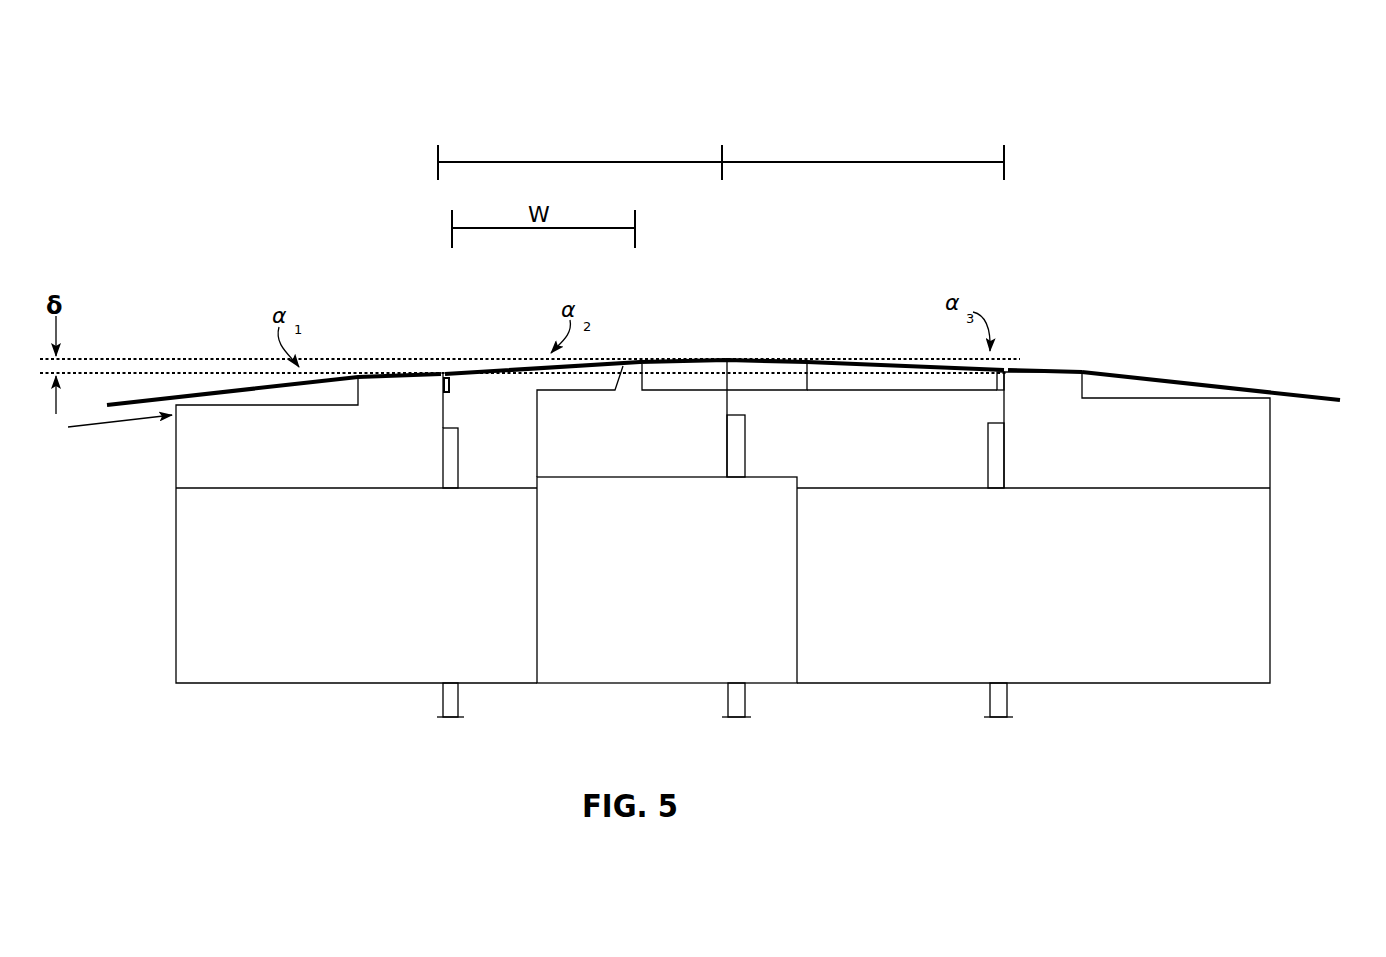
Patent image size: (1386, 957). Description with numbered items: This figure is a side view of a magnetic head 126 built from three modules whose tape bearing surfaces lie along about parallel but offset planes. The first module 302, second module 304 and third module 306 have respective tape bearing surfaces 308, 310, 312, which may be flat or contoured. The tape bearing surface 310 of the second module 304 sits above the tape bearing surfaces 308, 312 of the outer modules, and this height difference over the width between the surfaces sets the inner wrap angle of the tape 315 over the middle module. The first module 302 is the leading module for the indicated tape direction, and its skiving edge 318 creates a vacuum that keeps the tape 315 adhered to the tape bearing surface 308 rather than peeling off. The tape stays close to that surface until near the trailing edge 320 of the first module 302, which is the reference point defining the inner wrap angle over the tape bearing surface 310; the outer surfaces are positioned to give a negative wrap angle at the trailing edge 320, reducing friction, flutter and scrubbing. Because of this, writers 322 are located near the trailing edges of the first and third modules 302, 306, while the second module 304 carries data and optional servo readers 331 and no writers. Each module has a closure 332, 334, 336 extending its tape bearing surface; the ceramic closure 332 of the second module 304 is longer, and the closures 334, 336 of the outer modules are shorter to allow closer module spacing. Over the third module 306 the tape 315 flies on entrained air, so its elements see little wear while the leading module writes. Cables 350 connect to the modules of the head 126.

The magnetic head 126 is at (344, 238).
The first module 302 is at (176, 452).
The second module 304 is at (614, 390).
The third module 306 is at (1272, 448).
The tape bearing surface 308 is at (413, 360).
The tape bearing surface 310 is at (670, 357).
The tape bearing surface 312 is at (1036, 366).
The tape 315 is at (1137, 374).
The skiving edge 318 is at (353, 384).
The trailing edge 320 is at (462, 383).
The writers 322 is at (444, 367).
The readers 331 is at (728, 357).
The closure 332 is at (775, 392).
The closure 334 is at (452, 392).
The closure 336 is at (997, 380).
The cables 350 is at (458, 700).